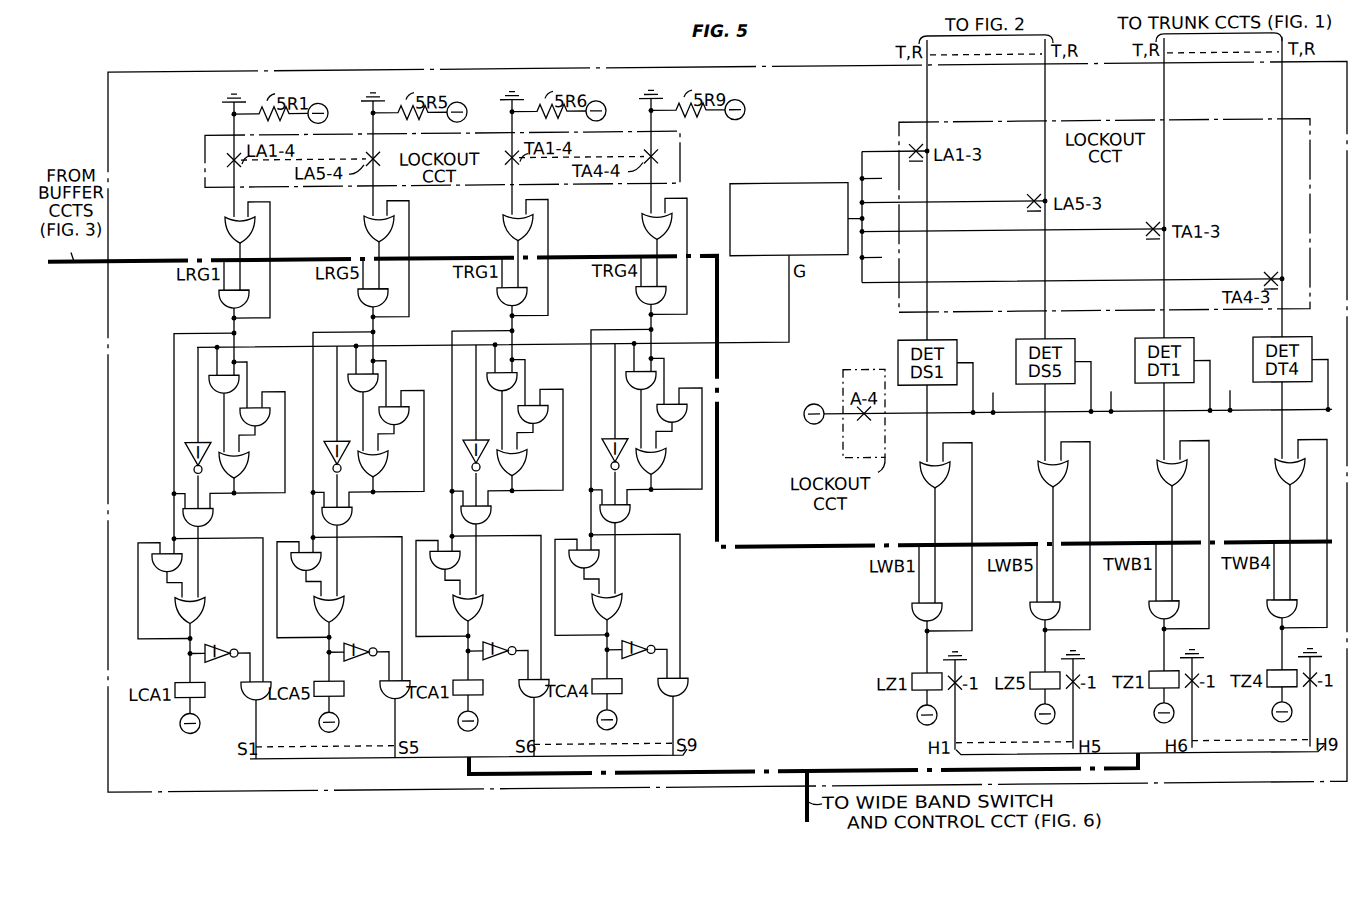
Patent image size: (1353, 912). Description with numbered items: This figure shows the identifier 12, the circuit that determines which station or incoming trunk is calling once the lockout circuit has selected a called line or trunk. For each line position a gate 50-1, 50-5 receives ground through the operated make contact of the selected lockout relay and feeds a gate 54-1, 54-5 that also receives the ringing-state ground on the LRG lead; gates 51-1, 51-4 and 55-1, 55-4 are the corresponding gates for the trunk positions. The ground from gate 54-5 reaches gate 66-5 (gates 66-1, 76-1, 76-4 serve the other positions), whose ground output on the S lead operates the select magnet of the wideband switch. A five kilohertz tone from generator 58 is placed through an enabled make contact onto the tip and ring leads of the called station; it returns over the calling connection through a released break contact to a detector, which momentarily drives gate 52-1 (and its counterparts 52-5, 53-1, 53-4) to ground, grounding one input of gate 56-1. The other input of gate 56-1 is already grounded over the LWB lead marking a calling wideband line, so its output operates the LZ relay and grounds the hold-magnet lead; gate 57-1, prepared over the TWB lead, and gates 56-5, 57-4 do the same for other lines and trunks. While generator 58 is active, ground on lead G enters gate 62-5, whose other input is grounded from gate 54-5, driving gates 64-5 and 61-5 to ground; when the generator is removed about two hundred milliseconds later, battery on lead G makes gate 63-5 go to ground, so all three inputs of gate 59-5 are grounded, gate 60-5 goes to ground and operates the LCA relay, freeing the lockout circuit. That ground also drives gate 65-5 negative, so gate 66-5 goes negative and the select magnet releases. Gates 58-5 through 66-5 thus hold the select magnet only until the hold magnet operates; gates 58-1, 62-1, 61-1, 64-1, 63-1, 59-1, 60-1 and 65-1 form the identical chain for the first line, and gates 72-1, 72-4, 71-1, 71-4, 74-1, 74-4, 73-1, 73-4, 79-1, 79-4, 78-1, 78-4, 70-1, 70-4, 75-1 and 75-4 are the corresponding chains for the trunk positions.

The identifier 12 is at (727, 426).
The generator 58 is at (827, 183).
The OR gate 50-1 is at (227, 222).
The gate 50-5 is at (363, 260).
The OR gate 51-1 is at (502, 258).
The OR gate 51-4 is at (641, 257).
The AND gate 54-1 is at (219, 294).
The gate 54-5 is at (349, 317).
The AND gate 55-1 is at (488, 316).
The AND gate 55-4 is at (627, 314).
The AND gate 62-1 is at (238, 380).
The gate 62-5 is at (390, 401).
The AND gate 72-1 is at (529, 400).
The AND gate 72-4 is at (668, 399).
The AND gate 61-1 is at (261, 404).
The gate 61-5 is at (411, 409).
The AND gate 71-1 is at (550, 408).
The AND gate 71-4 is at (689, 407).
The OR gate 64-1 is at (246, 460).
The gate 64-5 is at (391, 471).
The OR gate 74-1 is at (530, 470).
The OR gate 74-4 is at (669, 469).
The inverter 63-1 is at (211, 453).
The gate 63-5 is at (364, 432).
The inverter 73-1 is at (503, 430).
The inverter 73-4 is at (642, 429).
The AND gate 59-1 is at (212, 516).
The gate 59-5 is at (360, 552).
The AND gate 79-1 is at (499, 550).
The AND gate 79-4 is at (638, 549).
The AND gate 58-1 is at (160, 548).
The gate 58-5 is at (295, 577).
The AND gate 78-1 is at (434, 576).
The AND gate 78-4 is at (573, 575).
The OR gate 60-1 is at (206, 604).
The gate 60-5 is at (349, 626).
The OR gate 70-1 is at (488, 625).
The OR gate 70-4 is at (627, 623).
The inverter 65-1 is at (230, 631).
The gate 65-5 is at (362, 649).
The inverter 75-1 is at (501, 647).
The inverter 75-4 is at (640, 646).
The AND gate 66-1 is at (249, 689).
The gate 66-5 is at (381, 720).
The AND gate 76-1 is at (520, 718).
The AND gate 76-4 is at (659, 717).
The gate 52-1 is at (929, 471).
The OR gate 52-5 is at (1048, 536).
The OR gate 53-1 is at (1167, 535).
The OR gate 53-4 is at (1285, 533).
The gate 56-1 is at (914, 612).
The AND gate 56-5 is at (1021, 630).
The gate 57-1 is at (1140, 629).
The AND gate 57-4 is at (1258, 628).